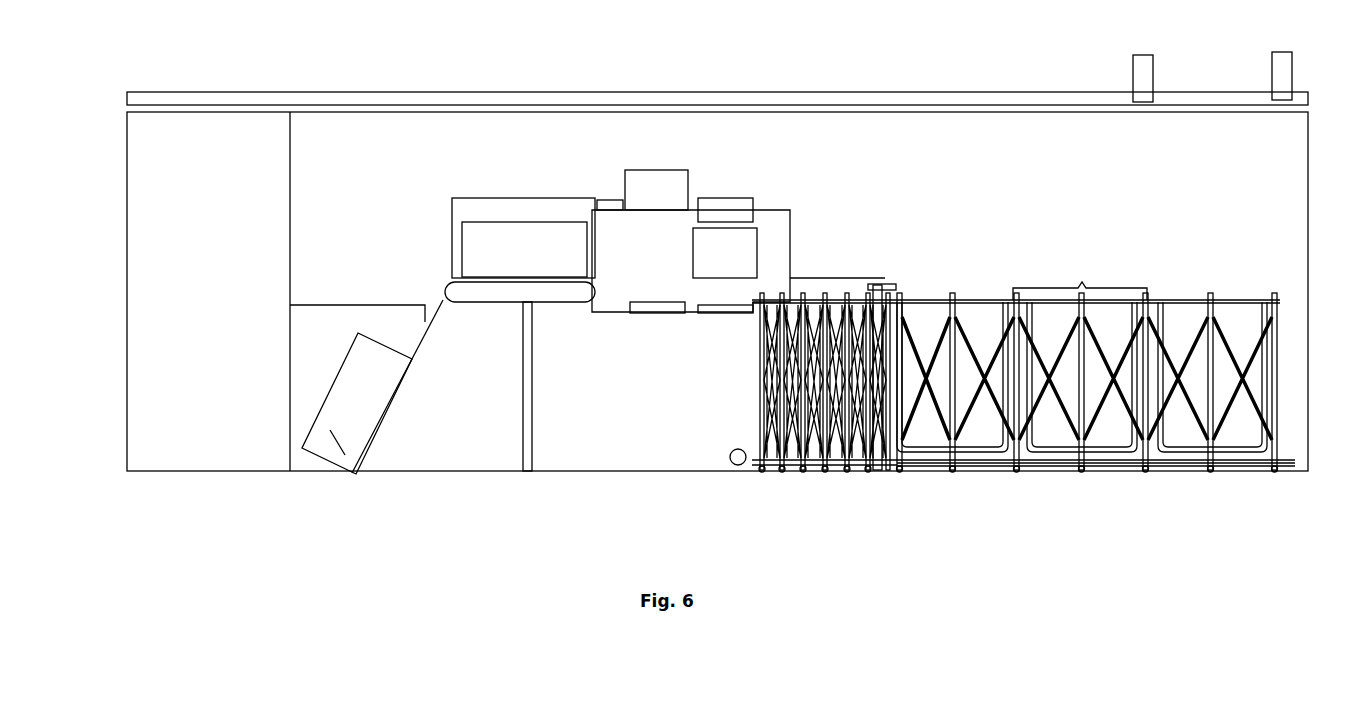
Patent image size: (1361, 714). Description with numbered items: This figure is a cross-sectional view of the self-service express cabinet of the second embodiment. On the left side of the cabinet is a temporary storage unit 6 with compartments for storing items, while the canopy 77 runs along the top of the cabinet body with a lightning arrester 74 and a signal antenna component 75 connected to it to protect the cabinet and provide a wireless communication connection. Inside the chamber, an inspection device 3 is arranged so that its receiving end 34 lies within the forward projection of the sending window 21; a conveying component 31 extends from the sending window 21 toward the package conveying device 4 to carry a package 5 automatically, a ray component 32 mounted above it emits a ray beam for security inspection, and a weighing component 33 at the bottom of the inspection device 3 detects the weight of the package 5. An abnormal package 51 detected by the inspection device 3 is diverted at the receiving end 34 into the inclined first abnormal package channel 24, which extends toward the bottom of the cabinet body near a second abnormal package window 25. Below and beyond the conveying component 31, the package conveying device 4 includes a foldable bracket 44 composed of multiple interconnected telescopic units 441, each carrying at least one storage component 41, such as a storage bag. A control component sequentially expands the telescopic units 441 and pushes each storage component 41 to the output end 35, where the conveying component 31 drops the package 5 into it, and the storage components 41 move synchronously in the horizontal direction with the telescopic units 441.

The inspection device 3 is at (712, 196).
The package conveying device 4 is at (1180, 290).
The package 5 is at (487, 245).
The temporary storage unit 6 is at (181, 452).
The sending window 21 is at (480, 195).
The first abnormal package channel 24 is at (385, 405).
The second abnormal package window 25 is at (340, 312).
The conveying component 31 is at (530, 287).
The ray component 32 is at (668, 195).
The weighing component 33 is at (730, 312).
The receiving end 34 is at (460, 290).
The output end 35 is at (878, 285).
The storage component 41 is at (935, 440).
The foldable bracket 44 is at (750, 386).
The abnormal package 51 is at (345, 455).
The lightning arrester 74 is at (1285, 70).
The signal antenna component 75 is at (1140, 72).
The canopy 77 is at (390, 103).
The telescopic unit 441 is at (772, 488).